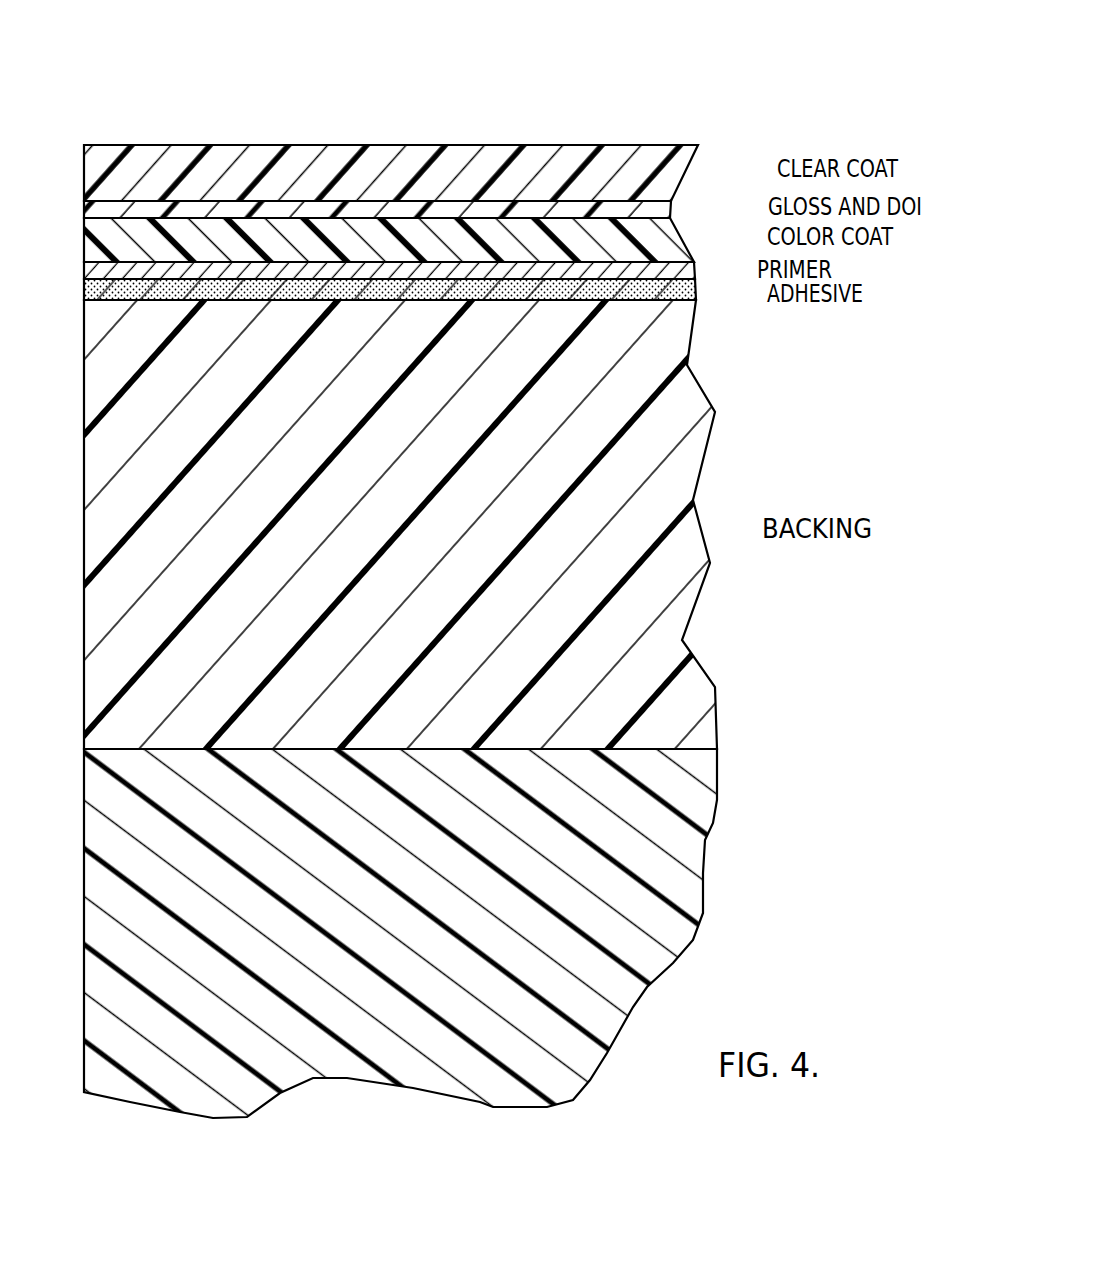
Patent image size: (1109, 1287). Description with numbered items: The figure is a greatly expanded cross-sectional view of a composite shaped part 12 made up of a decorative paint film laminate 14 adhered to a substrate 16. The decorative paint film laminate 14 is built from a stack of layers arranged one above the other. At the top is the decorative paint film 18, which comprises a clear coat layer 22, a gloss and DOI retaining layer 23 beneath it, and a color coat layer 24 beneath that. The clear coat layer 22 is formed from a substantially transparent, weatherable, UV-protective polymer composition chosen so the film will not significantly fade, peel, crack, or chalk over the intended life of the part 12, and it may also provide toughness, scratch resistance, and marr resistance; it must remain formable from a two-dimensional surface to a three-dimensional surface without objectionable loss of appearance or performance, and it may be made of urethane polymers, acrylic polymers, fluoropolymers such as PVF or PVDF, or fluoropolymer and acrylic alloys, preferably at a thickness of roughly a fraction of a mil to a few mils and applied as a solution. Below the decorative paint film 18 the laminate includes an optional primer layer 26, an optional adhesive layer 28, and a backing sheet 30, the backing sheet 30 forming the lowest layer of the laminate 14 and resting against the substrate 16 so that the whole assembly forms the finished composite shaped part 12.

The composite shaped part 12 is at (416, 561).
The decorative paint film laminate 14 is at (405, 417).
The substrate 16 is at (707, 808).
The decorative paint film 18 is at (431, 173).
The clear coat layer 22 is at (641, 157).
The gloss and DOI retaining layer 23 is at (670, 207).
The color coat layer 24 is at (660, 242).
The primer layer 26 is at (691, 269).
The adhesive layer 28 is at (699, 299).
The backing sheet 30 is at (680, 402).